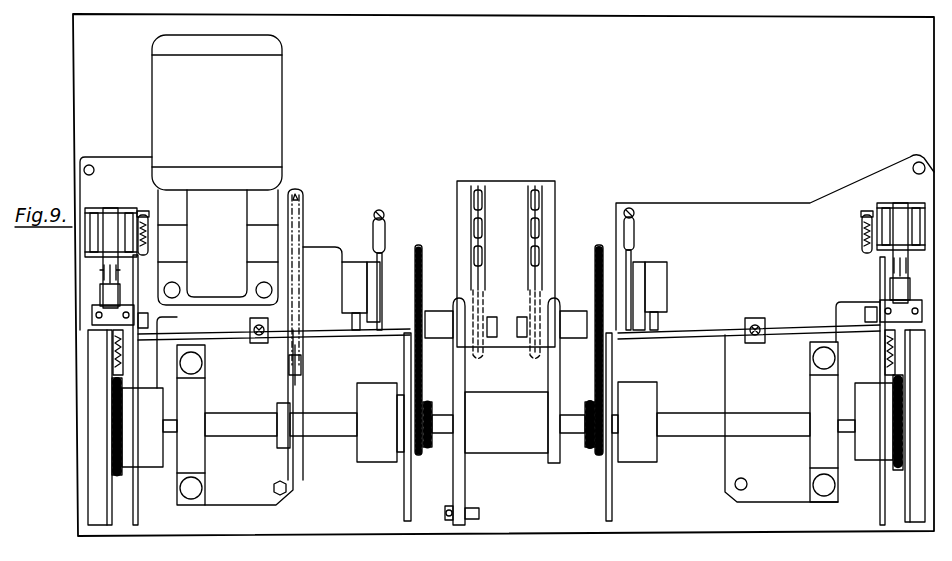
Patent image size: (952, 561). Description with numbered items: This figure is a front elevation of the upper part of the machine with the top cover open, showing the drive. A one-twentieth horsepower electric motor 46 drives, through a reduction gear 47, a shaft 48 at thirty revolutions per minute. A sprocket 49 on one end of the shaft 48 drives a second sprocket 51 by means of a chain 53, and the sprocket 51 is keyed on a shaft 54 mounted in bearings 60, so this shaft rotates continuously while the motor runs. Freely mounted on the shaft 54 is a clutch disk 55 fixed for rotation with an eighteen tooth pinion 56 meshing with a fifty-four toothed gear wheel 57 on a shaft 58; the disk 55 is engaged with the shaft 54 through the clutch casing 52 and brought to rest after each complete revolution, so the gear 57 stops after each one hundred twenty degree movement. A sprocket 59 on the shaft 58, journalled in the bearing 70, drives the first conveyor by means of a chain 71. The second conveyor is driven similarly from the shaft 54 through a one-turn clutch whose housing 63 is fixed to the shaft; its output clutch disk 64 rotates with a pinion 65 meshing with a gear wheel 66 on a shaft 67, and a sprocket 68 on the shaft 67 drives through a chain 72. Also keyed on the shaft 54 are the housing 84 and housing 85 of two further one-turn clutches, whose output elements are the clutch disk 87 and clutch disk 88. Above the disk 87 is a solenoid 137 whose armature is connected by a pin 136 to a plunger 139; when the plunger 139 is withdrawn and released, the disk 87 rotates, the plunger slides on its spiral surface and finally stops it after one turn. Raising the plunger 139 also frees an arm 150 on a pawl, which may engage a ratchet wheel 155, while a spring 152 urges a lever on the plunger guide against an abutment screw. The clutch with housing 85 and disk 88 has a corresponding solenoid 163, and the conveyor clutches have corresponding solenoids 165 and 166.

The electric motor 46 is at (270, 137).
The reduction gear 47 is at (237, 213).
The shaft 48 is at (283, 225).
The sprocket 49 is at (302, 207).
The second sprocket 51 is at (275, 499).
The clutch casing 52 is at (650, 462).
The chain 53 is at (291, 366).
The shaft 54 is at (244, 440).
The clutch disk 55 is at (606, 501).
The pinion 56 is at (593, 450).
The gear wheel 57 is at (599, 244).
The shaft 58 is at (521, 317).
The sprocket 59 is at (538, 360).
The bearings 60 is at (193, 500).
The clutch housing 63 is at (382, 460).
The clutch disk 64 is at (404, 502).
The pinion 65 is at (420, 450).
The gear wheel 66 is at (418, 244).
The shaft 67 is at (492, 317).
The sprocket 68 is at (480, 360).
The bearing 70 is at (557, 298).
The chain 71 is at (536, 186).
The chain 72 is at (478, 186).
The clutch housing 84 is at (162, 470).
The clutch housing 85 is at (874, 450).
The clutch disk 87 is at (112, 520).
The clutch disk 88 is at (905, 503).
The pin 136 is at (102, 270).
The solenoid 137 is at (104, 226).
The plunger 139 is at (110, 295).
The arm 150 is at (112, 360).
The spring 152 is at (150, 213).
The ratchet wheel 155 is at (120, 423).
The solenoid 163 is at (890, 225).
The solenoid 165 is at (651, 262).
The solenoid 166 is at (355, 262).